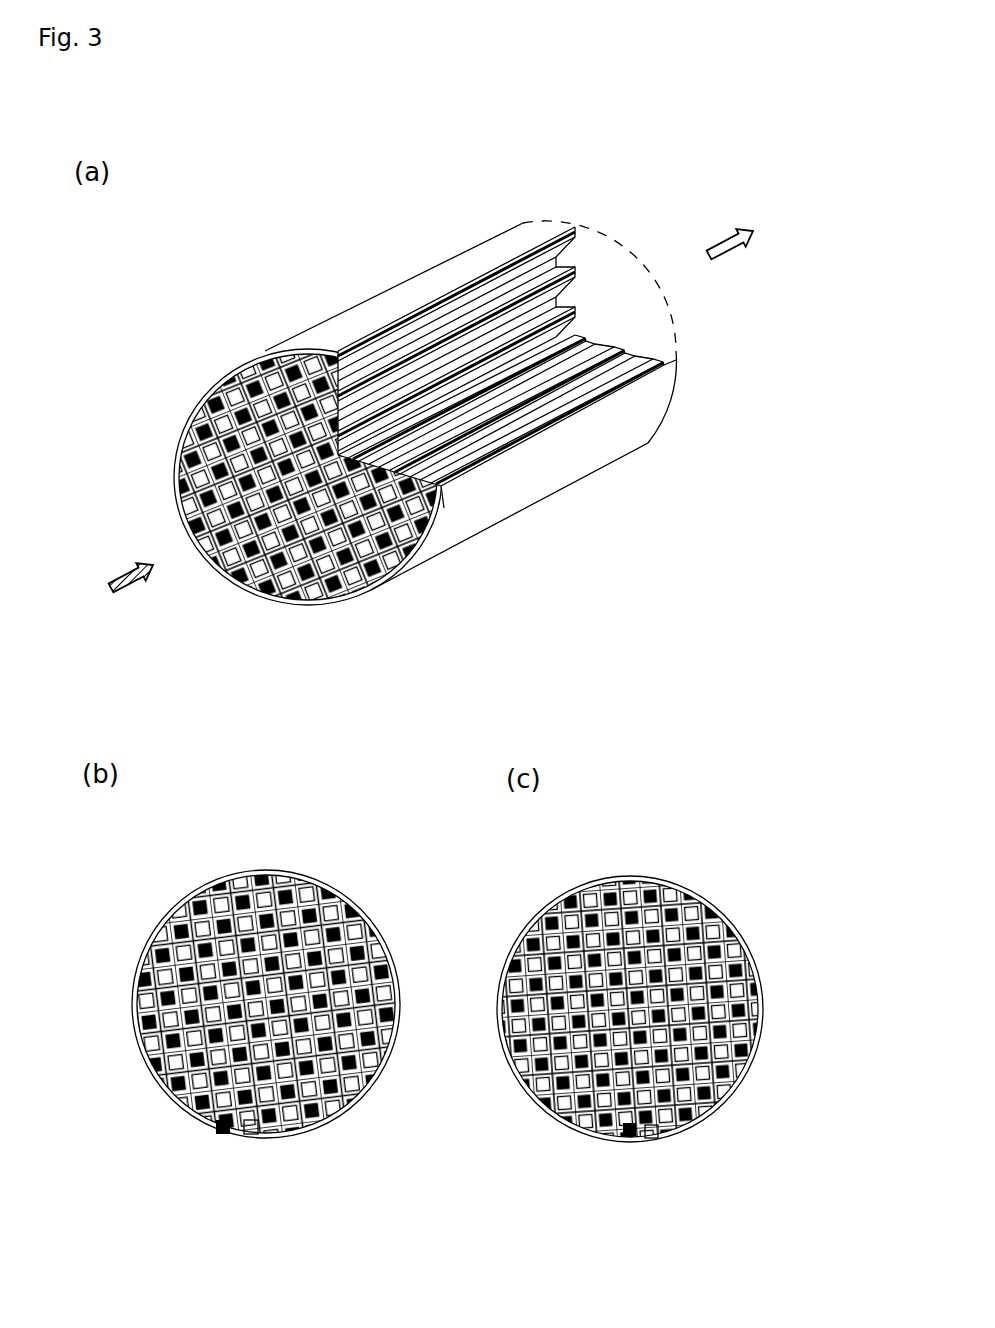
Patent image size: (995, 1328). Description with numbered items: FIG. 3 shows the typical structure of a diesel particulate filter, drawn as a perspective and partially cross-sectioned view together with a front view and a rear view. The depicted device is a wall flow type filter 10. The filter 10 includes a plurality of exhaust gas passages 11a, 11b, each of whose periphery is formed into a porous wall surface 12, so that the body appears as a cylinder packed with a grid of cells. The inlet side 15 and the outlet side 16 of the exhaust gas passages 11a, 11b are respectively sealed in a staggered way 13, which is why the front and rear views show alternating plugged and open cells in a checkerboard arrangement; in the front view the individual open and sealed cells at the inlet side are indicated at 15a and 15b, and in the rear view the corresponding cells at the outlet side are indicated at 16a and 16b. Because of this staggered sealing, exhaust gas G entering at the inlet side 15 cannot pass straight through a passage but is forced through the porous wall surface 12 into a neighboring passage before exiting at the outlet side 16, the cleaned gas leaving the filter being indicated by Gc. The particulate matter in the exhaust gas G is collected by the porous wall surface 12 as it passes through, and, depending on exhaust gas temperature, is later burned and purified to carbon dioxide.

The wall flow type filter 10 is at (390, 215).
The exhaust gas passage 11a is at (176, 430).
The exhaust gas passage 11b is at (521, 1088).
The porous wall surface 12 is at (215, 397).
The staggered sealing 13 is at (228, 362).
The inlet side 15 is at (258, 296).
The open cell at inlet end face 15a is at (215, 1128).
The plugged cell at inlet end face 15b is at (242, 1128).
The outlet side 16 is at (553, 197).
The plugged cell at outlet end face 16a is at (622, 1128).
The open cell at outlet end face 16b is at (644, 1133).
The exhaust gas G is at (131, 591).
The cleaned gas flow Gc is at (730, 230).